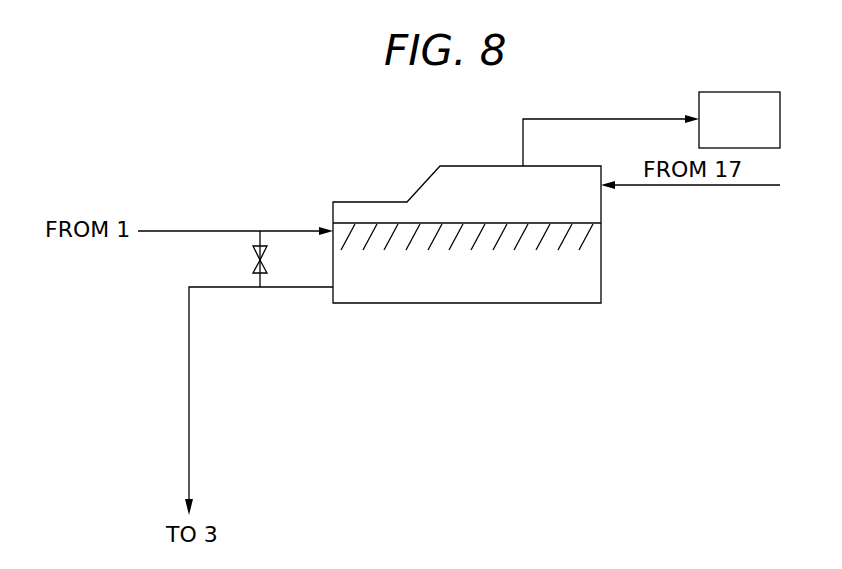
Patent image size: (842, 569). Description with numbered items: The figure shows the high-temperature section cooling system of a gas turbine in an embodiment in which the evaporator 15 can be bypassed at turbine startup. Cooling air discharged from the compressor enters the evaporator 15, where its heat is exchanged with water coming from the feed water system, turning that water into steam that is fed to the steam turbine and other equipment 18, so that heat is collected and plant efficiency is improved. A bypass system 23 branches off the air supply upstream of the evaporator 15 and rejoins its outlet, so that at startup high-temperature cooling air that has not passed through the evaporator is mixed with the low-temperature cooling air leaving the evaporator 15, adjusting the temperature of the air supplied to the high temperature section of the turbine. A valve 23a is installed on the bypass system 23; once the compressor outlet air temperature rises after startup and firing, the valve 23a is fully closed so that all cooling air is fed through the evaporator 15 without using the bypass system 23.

The evaporator 15 is at (410, 303).
The steam turbine and other equipment 18 is at (752, 129).
The bypass system 23 is at (258, 281).
The valve 23a is at (257, 258).